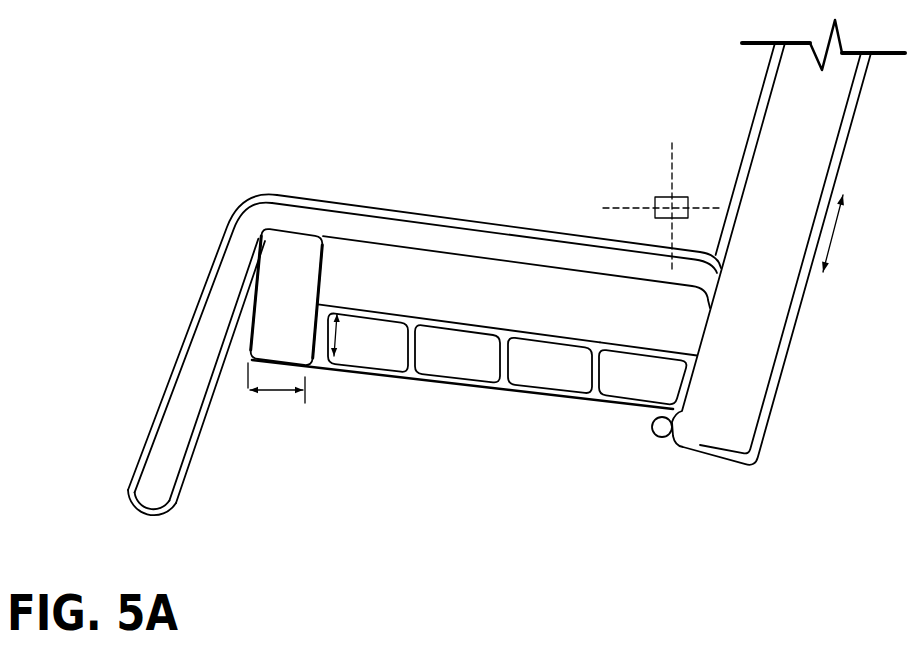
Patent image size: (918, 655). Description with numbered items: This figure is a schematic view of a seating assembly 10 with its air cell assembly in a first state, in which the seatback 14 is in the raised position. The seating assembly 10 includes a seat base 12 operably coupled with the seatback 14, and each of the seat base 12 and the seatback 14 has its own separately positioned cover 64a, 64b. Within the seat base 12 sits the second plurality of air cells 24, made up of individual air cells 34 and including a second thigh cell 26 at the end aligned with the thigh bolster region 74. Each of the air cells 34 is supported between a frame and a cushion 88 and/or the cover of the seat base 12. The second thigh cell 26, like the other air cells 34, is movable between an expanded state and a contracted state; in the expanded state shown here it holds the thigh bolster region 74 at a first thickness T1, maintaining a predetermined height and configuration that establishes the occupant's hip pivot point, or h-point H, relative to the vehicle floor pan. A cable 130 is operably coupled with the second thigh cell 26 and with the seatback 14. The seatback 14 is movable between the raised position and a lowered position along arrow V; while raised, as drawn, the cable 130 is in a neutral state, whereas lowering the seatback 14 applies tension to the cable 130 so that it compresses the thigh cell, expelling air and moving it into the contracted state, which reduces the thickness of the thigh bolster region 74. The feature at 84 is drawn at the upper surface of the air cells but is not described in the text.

The seating assembly 10 is at (250, 88).
The seat base 12 is at (478, 247).
The seatback 14 is at (788, 193).
The second plurality of air cells 24 is at (367, 297).
The second thigh cell 26 is at (295, 252).
The air cells 34 is at (443, 352).
The cover 64a is at (757, 123).
The cover 64b is at (215, 252).
The thigh bolster region 74 is at (180, 427).
The top surface of cells 84 is at (612, 335).
The cushion 88 is at (543, 285).
The cable 130 is at (247, 342).
The first thickness T1 is at (307, 370).
The h-point H is at (663, 206).
The arrow V is at (841, 233).